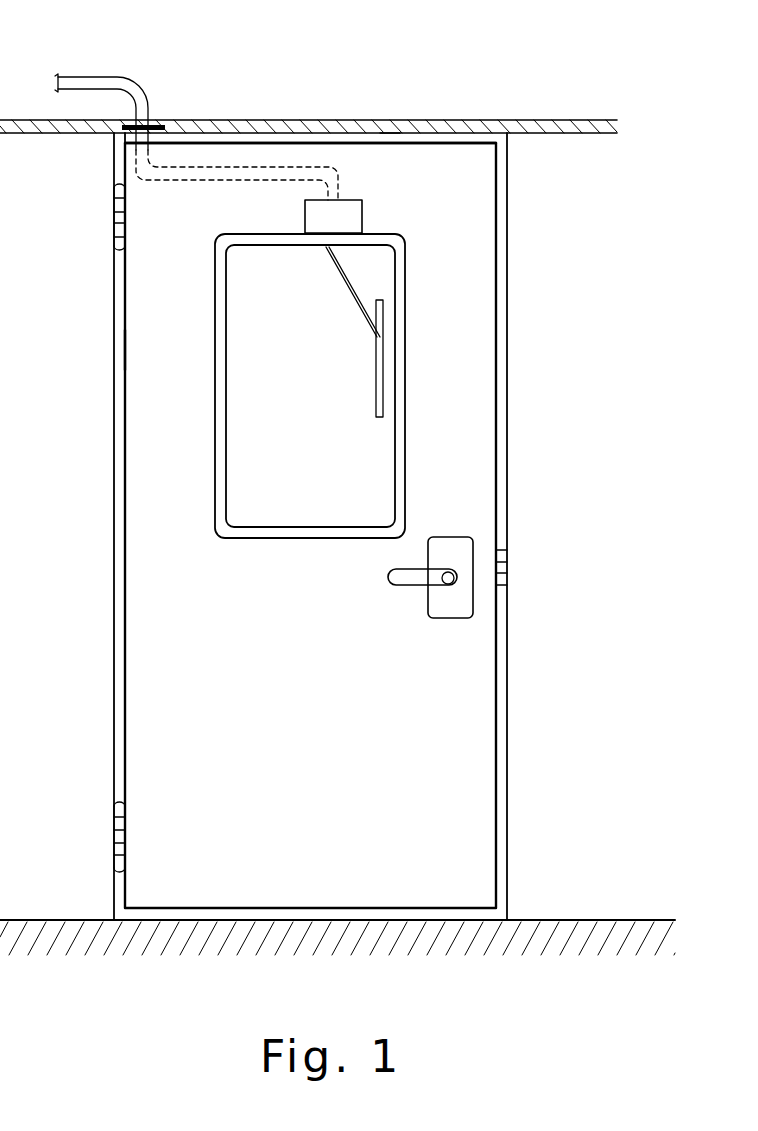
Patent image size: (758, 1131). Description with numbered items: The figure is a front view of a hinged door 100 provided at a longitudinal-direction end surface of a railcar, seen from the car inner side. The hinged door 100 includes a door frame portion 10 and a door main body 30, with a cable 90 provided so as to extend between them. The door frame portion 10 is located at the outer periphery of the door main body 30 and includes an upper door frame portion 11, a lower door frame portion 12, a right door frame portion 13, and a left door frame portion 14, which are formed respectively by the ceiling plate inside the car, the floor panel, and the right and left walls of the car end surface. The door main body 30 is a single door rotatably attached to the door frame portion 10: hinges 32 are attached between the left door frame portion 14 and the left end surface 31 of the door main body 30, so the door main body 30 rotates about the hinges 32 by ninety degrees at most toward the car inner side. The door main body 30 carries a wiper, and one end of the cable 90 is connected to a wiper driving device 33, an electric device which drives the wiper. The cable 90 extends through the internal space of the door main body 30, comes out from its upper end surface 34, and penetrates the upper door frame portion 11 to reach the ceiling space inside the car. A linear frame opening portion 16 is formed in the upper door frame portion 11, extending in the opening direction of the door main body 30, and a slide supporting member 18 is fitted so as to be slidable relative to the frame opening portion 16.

The door frame portion 10 is at (302, 122).
The upper door frame portion 11 is at (383, 133).
The lower door frame portion 12 is at (452, 920).
The right door frame portion 13 is at (508, 706).
The left door frame portion 14 is at (113, 665).
The frame opening portion 16 is at (150, 125).
The slide supporting member 18 is at (134, 136).
The door main body 30 is at (152, 474).
The left end surface 31 is at (125, 347).
The hinges 32 is at (118, 225).
The wiper driving device 33 is at (355, 215).
The upper end surface 34 is at (221, 143).
The cable 90 is at (105, 78).
The hinged door 100 is at (508, 84).